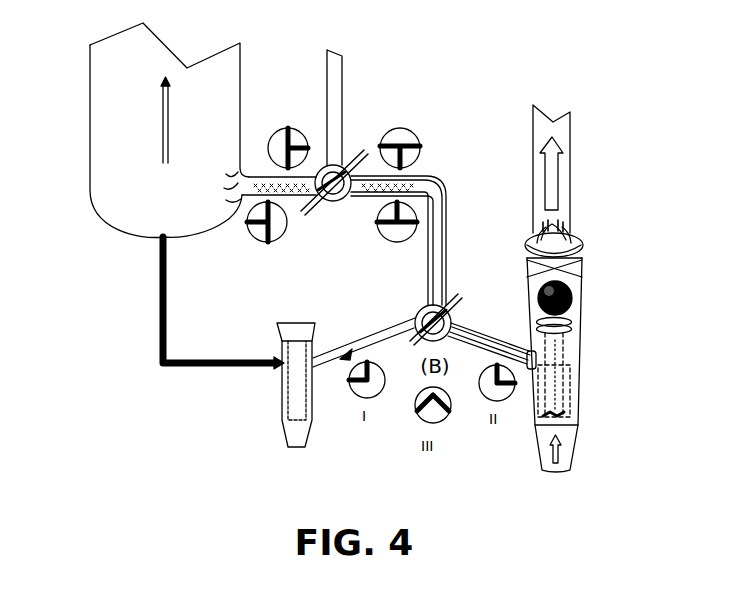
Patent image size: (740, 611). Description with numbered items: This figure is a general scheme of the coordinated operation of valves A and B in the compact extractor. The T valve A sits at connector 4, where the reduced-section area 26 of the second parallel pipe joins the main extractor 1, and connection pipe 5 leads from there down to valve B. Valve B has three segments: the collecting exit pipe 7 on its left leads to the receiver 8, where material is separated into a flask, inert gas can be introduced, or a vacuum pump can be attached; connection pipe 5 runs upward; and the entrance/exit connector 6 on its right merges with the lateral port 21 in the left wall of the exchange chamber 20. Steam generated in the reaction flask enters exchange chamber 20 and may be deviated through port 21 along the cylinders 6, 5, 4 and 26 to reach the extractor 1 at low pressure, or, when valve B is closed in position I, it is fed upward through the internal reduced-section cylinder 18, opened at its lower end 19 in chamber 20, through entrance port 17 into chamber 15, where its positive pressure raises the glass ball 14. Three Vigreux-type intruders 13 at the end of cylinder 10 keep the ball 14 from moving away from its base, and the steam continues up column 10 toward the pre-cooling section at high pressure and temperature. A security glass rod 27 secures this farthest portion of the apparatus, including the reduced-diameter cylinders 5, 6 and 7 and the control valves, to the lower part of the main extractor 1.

The extractor 1 is at (90, 110).
The connector 4 is at (310, 165).
The connection pipe 5 is at (447, 192).
The entrance/exit connector 6 is at (481, 349).
The collecting exit pipe 7 is at (313, 368).
The receiver 8 is at (282, 410).
The cylinder 10 is at (570, 122).
The intruders 13 is at (580, 258).
The ball 14 is at (573, 297).
The chamber 15 is at (583, 270).
The entrance port 17 is at (583, 323).
The reduced-section cylinder 18 is at (578, 403).
The lower end 19 is at (537, 430).
The exchange chamber 20 is at (580, 347).
The lateral port 21 is at (575, 375).
The reduced-section area 26 is at (342, 62).
The security glass rod 27 is at (160, 307).